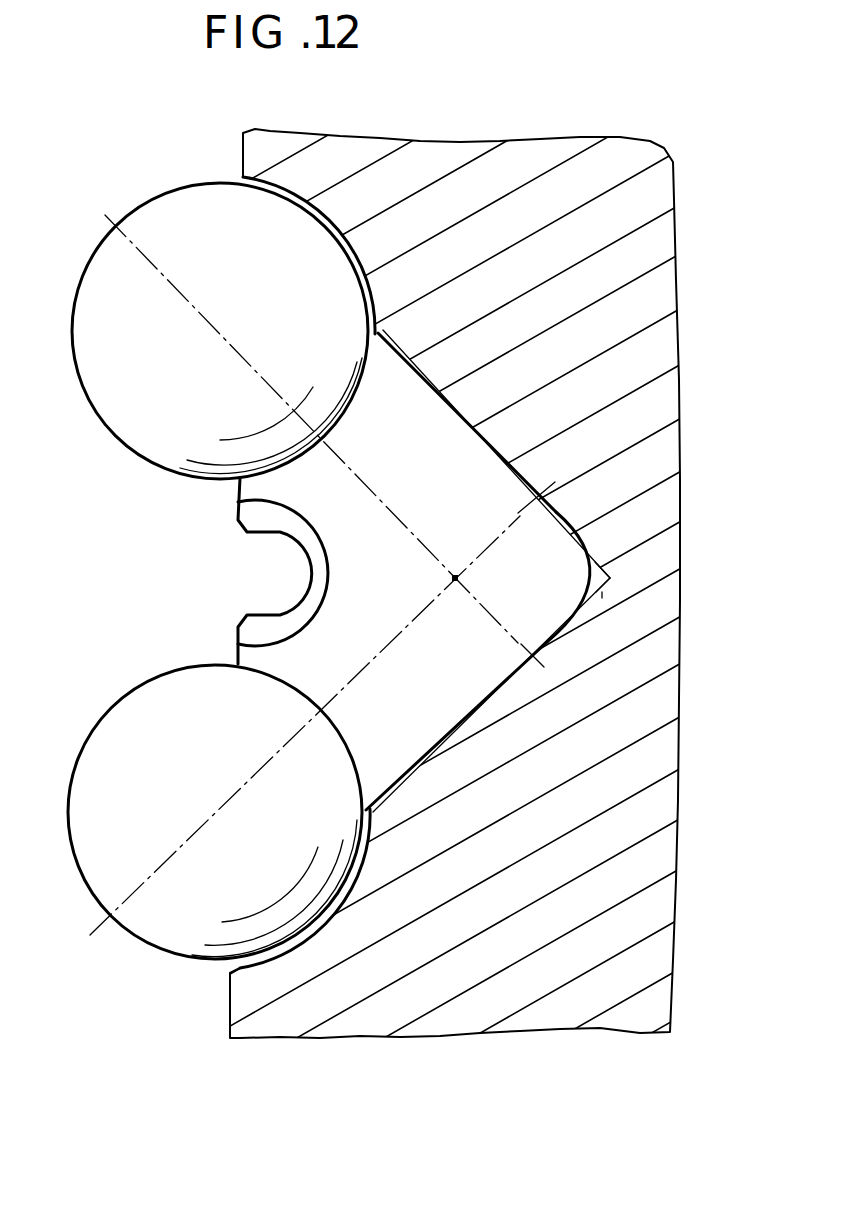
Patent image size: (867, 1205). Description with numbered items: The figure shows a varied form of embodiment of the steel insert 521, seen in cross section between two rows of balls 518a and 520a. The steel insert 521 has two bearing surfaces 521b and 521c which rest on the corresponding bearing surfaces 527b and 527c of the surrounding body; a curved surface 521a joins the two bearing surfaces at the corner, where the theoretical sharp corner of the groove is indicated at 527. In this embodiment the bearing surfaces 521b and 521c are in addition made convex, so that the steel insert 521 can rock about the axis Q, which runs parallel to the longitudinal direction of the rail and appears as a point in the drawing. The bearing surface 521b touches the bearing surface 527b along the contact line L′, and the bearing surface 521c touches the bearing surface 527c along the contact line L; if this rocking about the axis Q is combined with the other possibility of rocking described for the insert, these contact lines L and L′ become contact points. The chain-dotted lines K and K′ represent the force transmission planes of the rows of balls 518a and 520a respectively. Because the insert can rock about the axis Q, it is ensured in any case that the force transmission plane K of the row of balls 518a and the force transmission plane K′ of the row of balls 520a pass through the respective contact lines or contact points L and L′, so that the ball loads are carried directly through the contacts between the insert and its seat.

The row of balls 518a is at (168, 217).
The row of balls 520a is at (152, 923).
The steel insert 521 is at (318, 510).
The curved groove bottom surface 521a is at (607, 570).
The bearing surface 521b is at (391, 360).
The bearing surface 521c is at (383, 783).
The theoretical groove corner 527 is at (603, 586).
The bearing surface 527b is at (398, 350).
The bearing surface 527c is at (405, 782).
The force transmission plane K is at (227, 337).
The force transmission plane K′ is at (98, 927).
The contact line L is at (542, 657).
The contact line L′ is at (537, 497).
The rocking axis Q is at (452, 578).